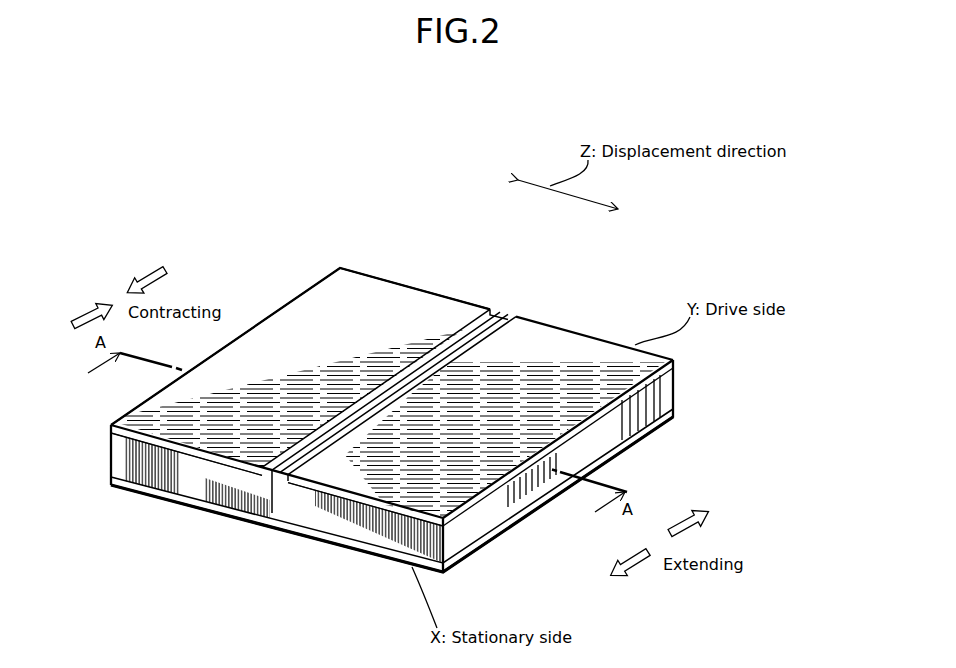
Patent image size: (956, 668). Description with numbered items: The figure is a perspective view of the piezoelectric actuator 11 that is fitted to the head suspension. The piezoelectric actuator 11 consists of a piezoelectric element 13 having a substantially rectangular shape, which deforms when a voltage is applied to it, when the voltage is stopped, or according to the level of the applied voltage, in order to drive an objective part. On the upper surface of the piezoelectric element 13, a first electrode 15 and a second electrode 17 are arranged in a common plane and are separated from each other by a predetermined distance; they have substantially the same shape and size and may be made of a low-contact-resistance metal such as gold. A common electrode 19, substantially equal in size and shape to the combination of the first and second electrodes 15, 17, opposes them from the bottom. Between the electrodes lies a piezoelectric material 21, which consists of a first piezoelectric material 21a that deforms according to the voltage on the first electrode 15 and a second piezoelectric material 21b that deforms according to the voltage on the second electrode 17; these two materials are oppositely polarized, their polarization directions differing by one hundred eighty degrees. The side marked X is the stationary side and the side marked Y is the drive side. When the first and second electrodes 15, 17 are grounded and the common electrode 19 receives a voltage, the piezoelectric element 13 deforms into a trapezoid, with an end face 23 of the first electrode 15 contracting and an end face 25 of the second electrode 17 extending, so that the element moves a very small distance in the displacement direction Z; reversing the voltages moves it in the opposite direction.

The piezoelectric actuator 11 is at (667, 250).
The piezoelectric element 13 is at (507, 295).
The first electrode 15 is at (402, 302).
The second electrode 17 is at (578, 350).
The common electrode 19 is at (638, 447).
The piezoelectric material 21 is at (357, 597).
The first piezoelectric material 21a is at (220, 513).
The second piezoelectric material 21b is at (347, 522).
The end face of the first electrode 23 is at (318, 285).
The end face of the second electrode 25 is at (583, 445).